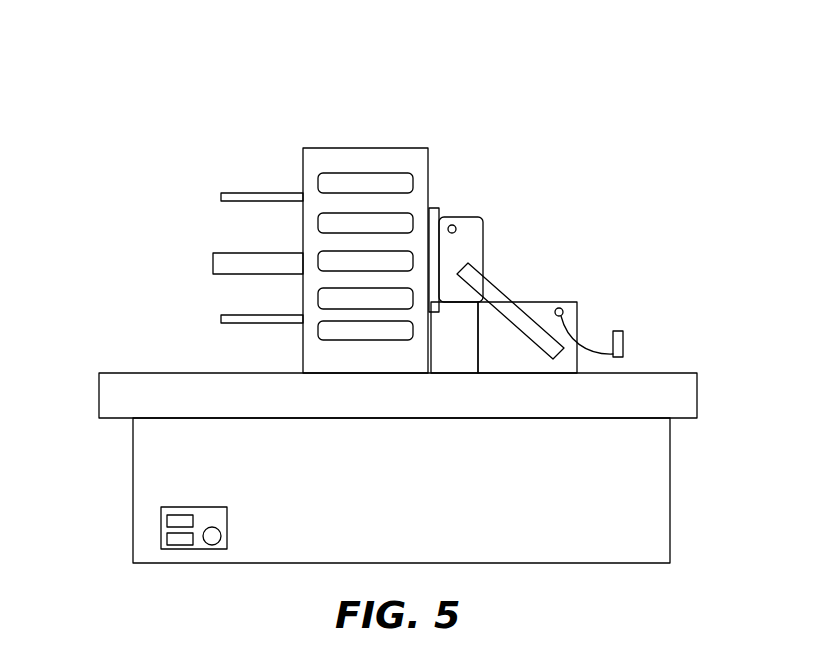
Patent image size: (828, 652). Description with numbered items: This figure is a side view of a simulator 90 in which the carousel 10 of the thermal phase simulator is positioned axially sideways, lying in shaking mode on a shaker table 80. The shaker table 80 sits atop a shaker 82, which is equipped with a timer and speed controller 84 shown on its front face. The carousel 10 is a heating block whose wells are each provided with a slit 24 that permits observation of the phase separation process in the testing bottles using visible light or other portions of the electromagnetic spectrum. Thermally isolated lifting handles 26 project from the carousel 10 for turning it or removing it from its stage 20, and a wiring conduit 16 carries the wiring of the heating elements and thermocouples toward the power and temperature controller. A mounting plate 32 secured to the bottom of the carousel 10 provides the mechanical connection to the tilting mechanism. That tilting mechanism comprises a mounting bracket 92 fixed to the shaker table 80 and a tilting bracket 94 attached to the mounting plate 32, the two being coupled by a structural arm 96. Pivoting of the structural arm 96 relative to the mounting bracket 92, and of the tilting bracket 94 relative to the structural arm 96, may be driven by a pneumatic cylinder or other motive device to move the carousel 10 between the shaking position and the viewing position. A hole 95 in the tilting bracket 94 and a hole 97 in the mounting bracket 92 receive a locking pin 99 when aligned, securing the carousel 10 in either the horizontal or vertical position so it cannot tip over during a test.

The simulator 90 is at (272, 80).
The carousel 10 is at (347, 116).
The stage 20 is at (427, 149).
The slit 24 is at (377, 180).
The lifting handles 26 is at (230, 193).
The wiring conduit 16 is at (228, 253).
The mounting plate 32 is at (432, 208).
The tilting bracket 94 is at (458, 217).
The hole 95 is at (456, 229).
The mounting bracket 92 is at (578, 310).
The structural arm 96 is at (497, 285).
The hole 97 is at (560, 308).
The locking pin 99 is at (623, 345).
The shaker table 80 is at (99, 395).
The shaker 82 is at (133, 470).
The timer and speed controller 84 is at (161, 532).